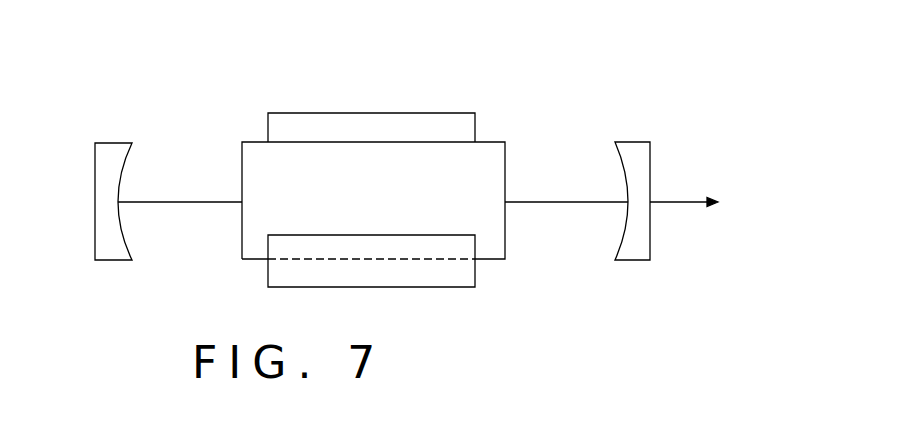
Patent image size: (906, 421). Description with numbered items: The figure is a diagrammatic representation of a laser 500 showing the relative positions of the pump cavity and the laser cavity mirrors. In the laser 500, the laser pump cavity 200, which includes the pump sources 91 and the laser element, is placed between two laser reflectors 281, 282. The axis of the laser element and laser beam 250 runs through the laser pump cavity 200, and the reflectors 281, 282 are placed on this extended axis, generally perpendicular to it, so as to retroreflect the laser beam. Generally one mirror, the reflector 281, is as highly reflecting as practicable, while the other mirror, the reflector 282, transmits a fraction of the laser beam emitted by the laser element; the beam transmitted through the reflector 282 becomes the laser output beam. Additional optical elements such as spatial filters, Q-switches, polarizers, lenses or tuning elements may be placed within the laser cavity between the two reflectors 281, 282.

The pump sources 91 is at (324, 95).
The laser pump cavity 200 is at (532, 152).
The axis of the laser element and laser beam 250 is at (189, 182).
The laser reflector 281 is at (108, 275).
The laser reflector 282 is at (630, 275).
The laser 500 is at (625, 93).